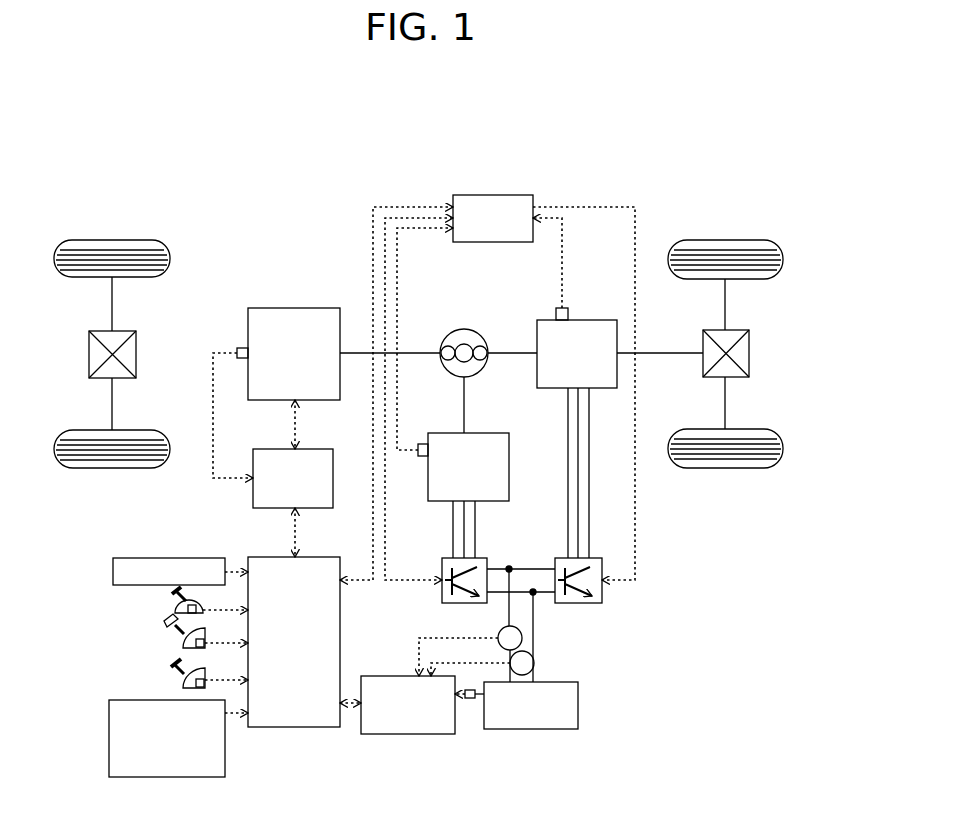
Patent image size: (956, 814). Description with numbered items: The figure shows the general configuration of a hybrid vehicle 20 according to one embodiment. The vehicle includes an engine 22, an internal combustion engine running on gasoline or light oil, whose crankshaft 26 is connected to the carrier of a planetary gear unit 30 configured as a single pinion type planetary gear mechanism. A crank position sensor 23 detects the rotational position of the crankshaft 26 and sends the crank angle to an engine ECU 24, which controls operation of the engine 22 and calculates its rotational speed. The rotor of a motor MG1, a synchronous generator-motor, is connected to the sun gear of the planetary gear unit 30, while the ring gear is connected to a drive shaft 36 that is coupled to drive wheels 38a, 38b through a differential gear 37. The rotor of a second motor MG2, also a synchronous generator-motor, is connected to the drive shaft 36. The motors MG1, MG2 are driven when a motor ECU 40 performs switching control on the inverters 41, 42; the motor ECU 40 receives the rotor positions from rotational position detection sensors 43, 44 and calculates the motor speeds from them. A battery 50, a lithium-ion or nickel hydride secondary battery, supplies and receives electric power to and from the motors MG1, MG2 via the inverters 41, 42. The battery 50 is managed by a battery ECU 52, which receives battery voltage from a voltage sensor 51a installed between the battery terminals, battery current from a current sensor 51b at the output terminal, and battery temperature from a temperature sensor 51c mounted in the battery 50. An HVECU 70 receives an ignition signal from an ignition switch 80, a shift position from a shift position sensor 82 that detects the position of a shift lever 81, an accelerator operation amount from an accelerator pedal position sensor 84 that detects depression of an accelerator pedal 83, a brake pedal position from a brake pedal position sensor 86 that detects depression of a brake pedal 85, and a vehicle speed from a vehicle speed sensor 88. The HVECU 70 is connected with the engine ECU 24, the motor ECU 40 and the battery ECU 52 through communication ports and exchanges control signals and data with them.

The hybrid vehicle 20 is at (612, 173).
The engine 22 is at (317, 308).
The crank position sensor 23 is at (242, 348).
The engine ECU 24 is at (312, 449).
The crankshaft 26 is at (352, 353).
The planetary gear unit 30 is at (465, 329).
The drive shaft 36 is at (676, 353).
The differential gear 37 is at (738, 330).
The drive wheel 38a is at (726, 240).
The drive wheel 38b is at (727, 469).
The motor ECU 40 is at (508, 194).
The inverter 41 is at (483, 558).
The inverter 42 is at (597, 558).
The rotational position detection sensor 43 is at (424, 444).
The rotational position detection sensor 44 is at (556, 313).
The battery 50 is at (578, 706).
The voltage sensor 51a is at (535, 662).
The current sensor 51b is at (523, 637).
The temperature sensor 51c is at (470, 700).
The battery ECU 52 is at (393, 676).
The HVECU 70 is at (313, 557).
The ignition switch 80 is at (113, 572).
The shift lever 81 is at (175, 597).
The shift position sensor 82 is at (185, 610).
The accelerator pedal 83 is at (178, 633).
The accelerator pedal position sensor 84 is at (190, 647).
The brake pedal 85 is at (178, 672).
The brake pedal position sensor 86 is at (190, 686).
The vehicle speed sensor 88 is at (109, 714).
The motor MG1 is at (489, 433).
The motor MG2 is at (591, 320).